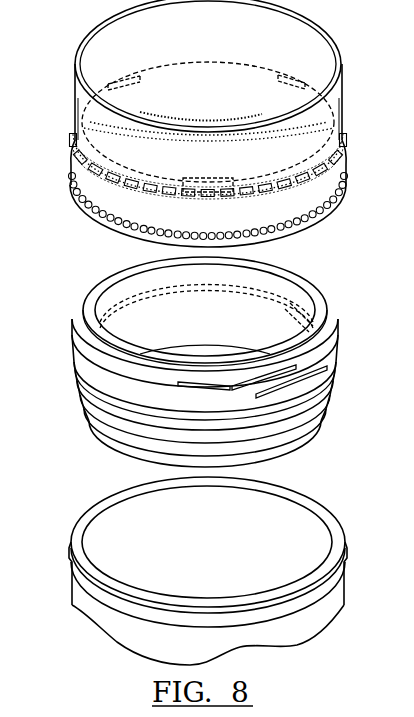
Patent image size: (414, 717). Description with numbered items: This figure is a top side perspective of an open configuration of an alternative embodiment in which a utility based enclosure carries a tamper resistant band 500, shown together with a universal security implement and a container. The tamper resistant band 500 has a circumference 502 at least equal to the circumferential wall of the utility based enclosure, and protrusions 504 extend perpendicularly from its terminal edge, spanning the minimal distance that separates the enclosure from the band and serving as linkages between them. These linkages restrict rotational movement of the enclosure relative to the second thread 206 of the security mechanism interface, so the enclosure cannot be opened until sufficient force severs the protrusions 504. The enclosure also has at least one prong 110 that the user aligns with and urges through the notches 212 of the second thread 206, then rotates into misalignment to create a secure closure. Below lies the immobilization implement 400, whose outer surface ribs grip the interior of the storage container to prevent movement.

The tamper resistant band 500 is at (66, 130).
The circumference 502 is at (80, 198).
The protrusions 504 is at (318, 211).
The prong 110 is at (300, 82).
The immobilization implement 400 is at (68, 389).
The second thread 206 is at (83, 347).
The notches 212 is at (316, 322).